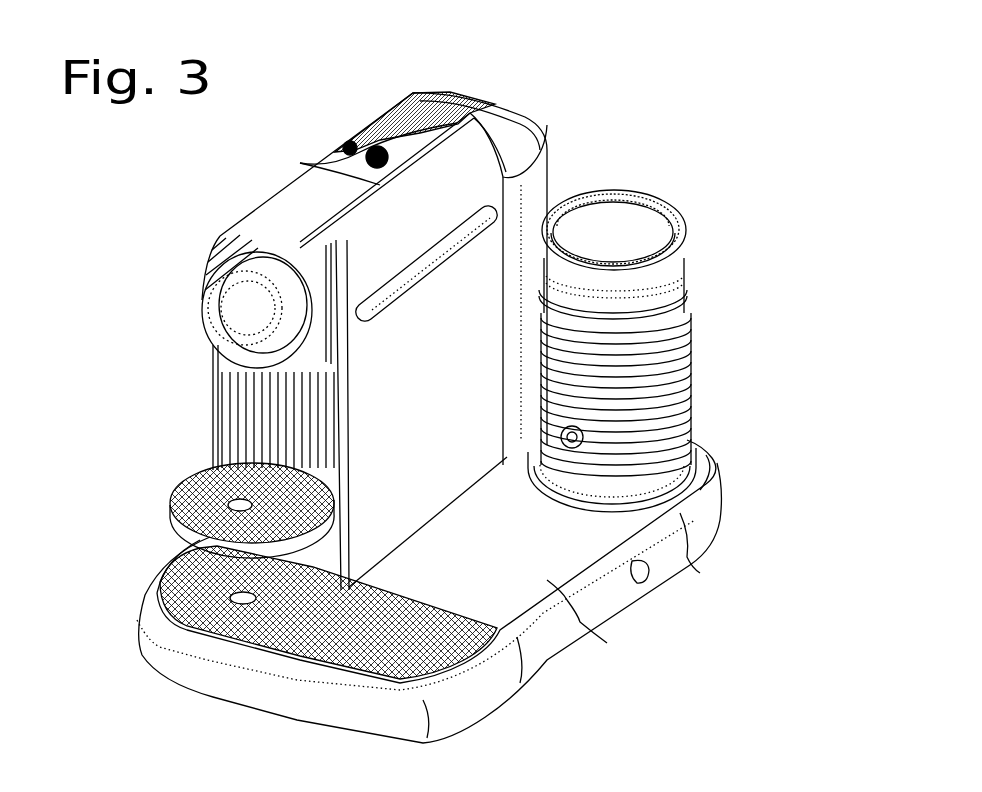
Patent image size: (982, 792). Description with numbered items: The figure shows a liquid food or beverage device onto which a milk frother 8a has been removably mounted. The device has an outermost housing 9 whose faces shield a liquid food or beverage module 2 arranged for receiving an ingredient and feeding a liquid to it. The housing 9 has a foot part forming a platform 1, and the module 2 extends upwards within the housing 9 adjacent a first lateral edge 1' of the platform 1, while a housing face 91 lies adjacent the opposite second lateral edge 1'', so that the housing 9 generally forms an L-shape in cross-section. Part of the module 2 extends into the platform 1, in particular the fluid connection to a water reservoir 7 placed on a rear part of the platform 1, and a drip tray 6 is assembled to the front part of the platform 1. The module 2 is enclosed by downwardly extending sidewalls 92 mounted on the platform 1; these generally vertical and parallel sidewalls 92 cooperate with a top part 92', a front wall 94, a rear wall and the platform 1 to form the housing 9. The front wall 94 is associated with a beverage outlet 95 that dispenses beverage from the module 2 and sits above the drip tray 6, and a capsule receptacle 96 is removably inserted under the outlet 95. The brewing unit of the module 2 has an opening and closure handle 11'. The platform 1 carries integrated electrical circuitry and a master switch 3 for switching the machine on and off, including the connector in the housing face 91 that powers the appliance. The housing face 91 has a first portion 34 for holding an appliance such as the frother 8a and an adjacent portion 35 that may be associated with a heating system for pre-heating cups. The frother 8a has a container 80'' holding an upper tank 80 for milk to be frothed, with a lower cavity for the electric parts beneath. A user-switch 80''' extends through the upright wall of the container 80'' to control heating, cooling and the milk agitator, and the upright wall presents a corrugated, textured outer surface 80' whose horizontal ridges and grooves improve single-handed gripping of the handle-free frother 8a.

The platform 1 is at (429, 591).
The first lateral edge 1' is at (216, 510).
The second lateral edge 1'' is at (739, 504).
The liquid food or beverage module 2 is at (333, 123).
The master switch 3 is at (643, 570).
The drip tray 6 is at (418, 608).
The water reservoir 7 is at (565, 137).
The milk frother 8a is at (693, 300).
The outermost housing 9 is at (475, 510).
The opening and closure handle 11' is at (265, 380).
The first portion 34 is at (707, 553).
The adjacent portion 35 is at (597, 620).
The upper tank 80 is at (617, 216).
The textured upright surface 80' is at (652, 394).
The container 80'' is at (649, 258).
The user-switch 80''' is at (497, 396).
The housing face 91 is at (517, 537).
The sidewalls 92 is at (394, 180).
The top part 92' is at (397, 92).
The front wall 94 is at (320, 350).
The beverage outlet 95 is at (237, 358).
The capsule receptacle 96 is at (253, 428).